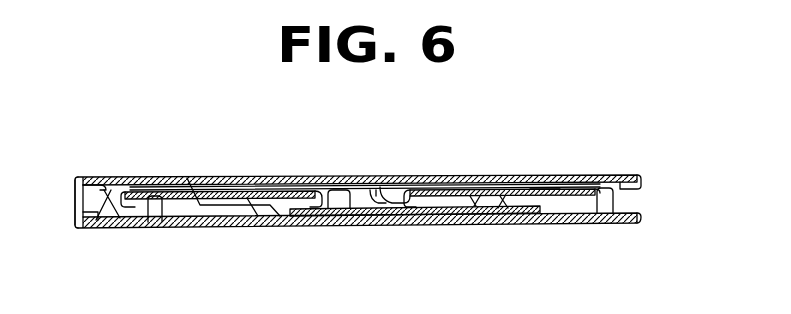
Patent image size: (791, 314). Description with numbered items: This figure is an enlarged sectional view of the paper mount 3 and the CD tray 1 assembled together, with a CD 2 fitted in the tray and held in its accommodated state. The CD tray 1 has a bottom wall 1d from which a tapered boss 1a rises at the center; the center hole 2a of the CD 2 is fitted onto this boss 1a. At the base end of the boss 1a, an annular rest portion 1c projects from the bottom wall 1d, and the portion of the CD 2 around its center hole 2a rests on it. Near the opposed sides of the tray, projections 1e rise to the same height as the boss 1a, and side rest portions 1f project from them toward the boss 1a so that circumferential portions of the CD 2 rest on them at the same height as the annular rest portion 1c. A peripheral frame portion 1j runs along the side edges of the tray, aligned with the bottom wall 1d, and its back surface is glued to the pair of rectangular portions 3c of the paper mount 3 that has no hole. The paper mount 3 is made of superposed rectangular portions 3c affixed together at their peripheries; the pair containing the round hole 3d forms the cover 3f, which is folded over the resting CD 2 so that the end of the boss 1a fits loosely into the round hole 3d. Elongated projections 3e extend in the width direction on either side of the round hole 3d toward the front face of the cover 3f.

The CD tray 1 is at (108, 226).
The boss 1a is at (347, 216).
The annular rest portion 1c is at (307, 216).
The bottom wall 1d is at (273, 214).
The projections 1e is at (103, 178).
The side rest portions 1f is at (152, 222).
The peripheral frame portion 1j is at (641, 214).
The CD 2 is at (262, 181).
The center hole 2a is at (397, 217).
The paper mount 3 is at (188, 179).
The rectangular portions 3c is at (485, 178).
The round hole 3d is at (376, 178).
The elongated projections 3e is at (313, 182).
The cover 3f is at (543, 170).